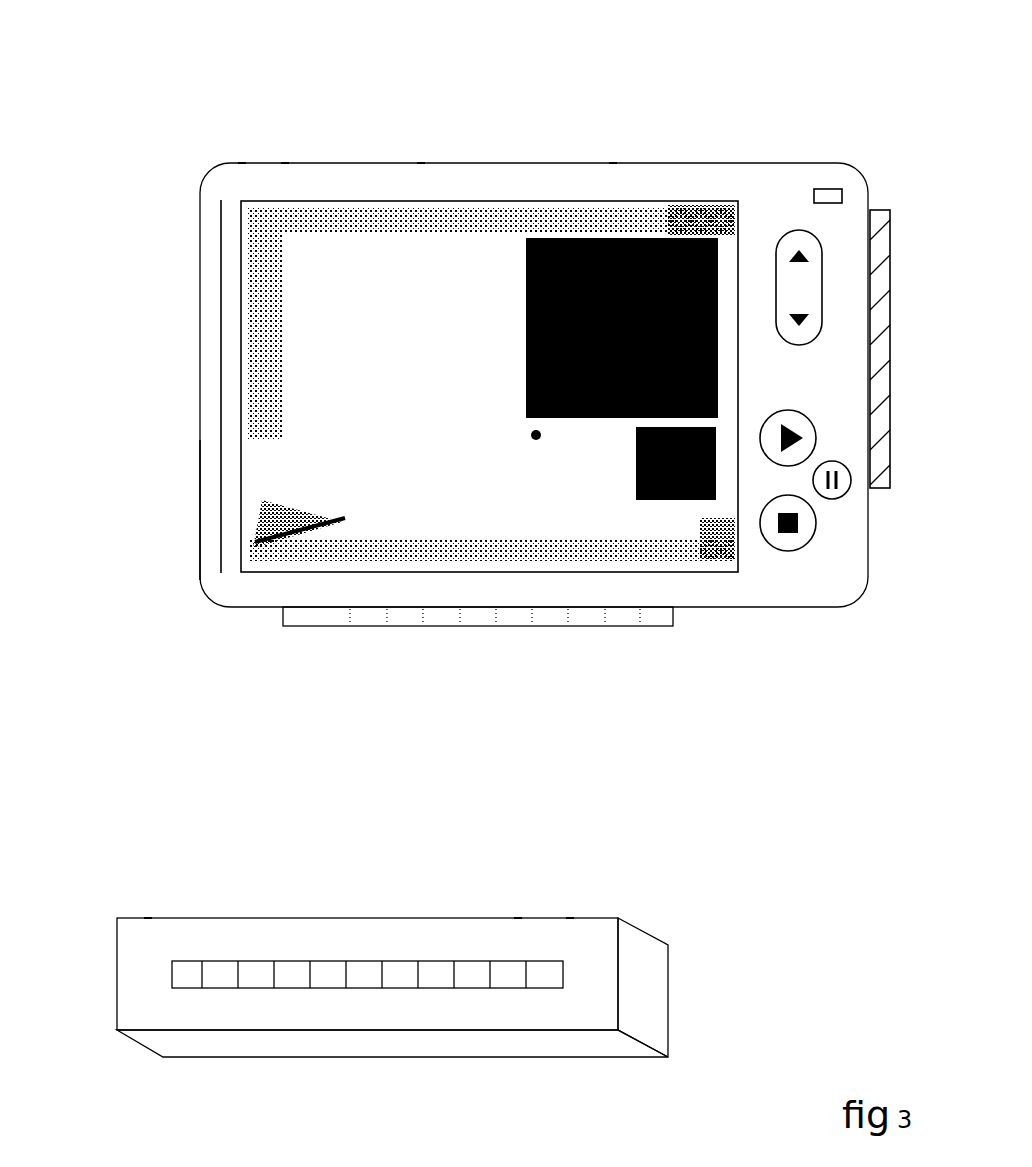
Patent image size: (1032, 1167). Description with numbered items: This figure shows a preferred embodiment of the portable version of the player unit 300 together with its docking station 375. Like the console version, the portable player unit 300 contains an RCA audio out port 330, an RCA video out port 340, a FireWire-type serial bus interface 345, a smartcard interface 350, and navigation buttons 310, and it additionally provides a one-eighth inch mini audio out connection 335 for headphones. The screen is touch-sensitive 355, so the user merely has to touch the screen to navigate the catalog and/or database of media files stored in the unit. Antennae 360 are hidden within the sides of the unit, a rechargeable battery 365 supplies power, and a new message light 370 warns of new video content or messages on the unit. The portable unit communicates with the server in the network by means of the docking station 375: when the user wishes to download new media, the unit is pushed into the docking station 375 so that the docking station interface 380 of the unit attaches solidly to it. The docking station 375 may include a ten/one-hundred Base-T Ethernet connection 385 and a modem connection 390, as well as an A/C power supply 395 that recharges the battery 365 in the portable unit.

The player unit (portable version) 300 is at (98, 97).
The navigation buttons 310 is at (722, 484).
The RCA audio out port 330 is at (242, 160).
The 1/8 inch mini audio out connection 335 is at (421, 160).
The RCA video out port 340 is at (285, 160).
The IEEE-1394 interface 345 is at (613, 160).
The smartcard interface 350 is at (887, 491).
The touch-sensitive screen 355 is at (285, 558).
The antennae 360 is at (221, 335).
The rechargeable battery 365 is at (200, 567).
The new message light 370 is at (833, 186).
The docking station 375 is at (518, 1063).
The docking station interface 380 is at (446, 652).
The 10/100 Base-T Ethernet connection 385 is at (518, 917).
The modem connection 390 is at (570, 917).
The A/C power supply 395 is at (148, 917).